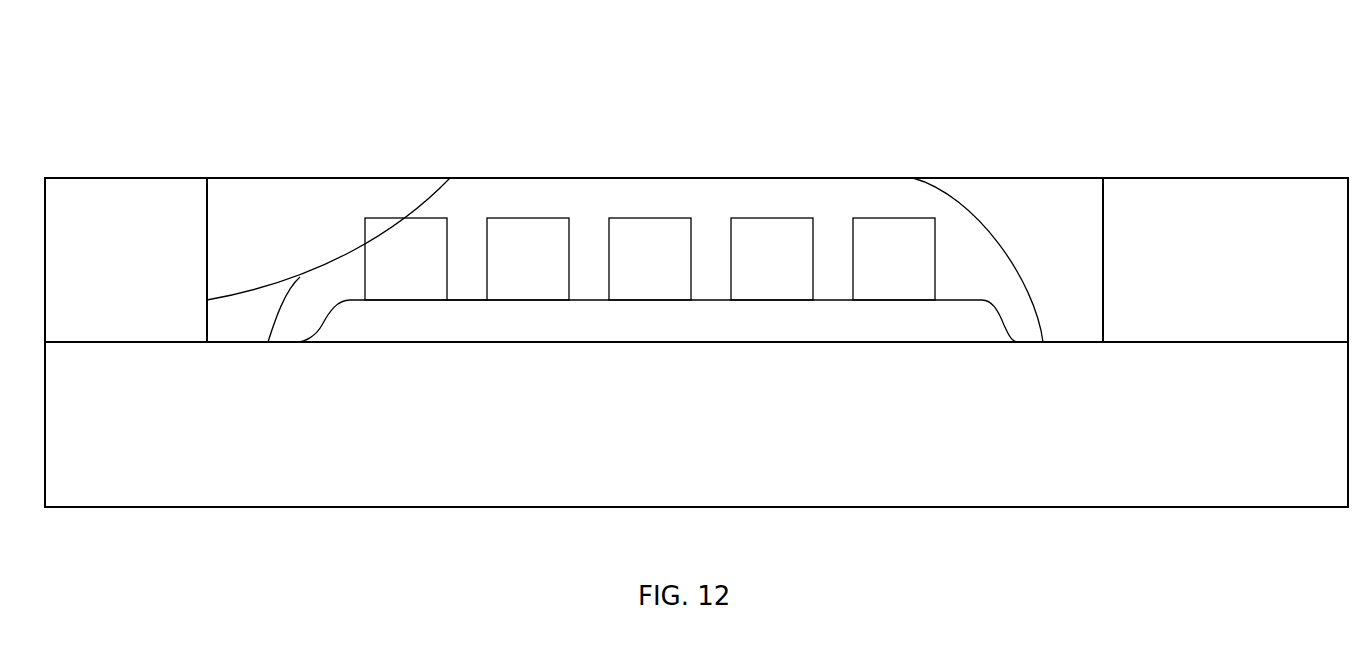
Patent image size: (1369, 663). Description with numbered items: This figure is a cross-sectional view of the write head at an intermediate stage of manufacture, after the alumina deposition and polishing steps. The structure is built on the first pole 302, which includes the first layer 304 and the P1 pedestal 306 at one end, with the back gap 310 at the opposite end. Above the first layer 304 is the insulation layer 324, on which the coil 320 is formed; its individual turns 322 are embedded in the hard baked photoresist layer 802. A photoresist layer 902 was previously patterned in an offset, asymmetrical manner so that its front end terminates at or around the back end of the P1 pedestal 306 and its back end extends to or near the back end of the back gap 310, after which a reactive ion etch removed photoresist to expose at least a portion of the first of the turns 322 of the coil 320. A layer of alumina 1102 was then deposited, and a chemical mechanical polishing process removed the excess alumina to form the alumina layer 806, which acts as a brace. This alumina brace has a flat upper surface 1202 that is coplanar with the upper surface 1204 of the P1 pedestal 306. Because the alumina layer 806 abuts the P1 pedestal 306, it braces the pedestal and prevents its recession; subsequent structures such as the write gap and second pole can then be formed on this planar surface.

The first pole 302 is at (1023, 509).
The first layer 304 is at (727, 446).
The P1 pedestal 306 is at (162, 252).
The back gap 310 is at (1288, 262).
The coil 320 is at (512, 302).
The turns 322 is at (408, 225).
The insulation layer 324 is at (737, 323).
The hard baked photoresist layer 802 is at (673, 205).
The alumina layer 806 is at (258, 195).
The photoresist layer 902 is at (248, 313).
The layer of alumina 1102 is at (615, 143).
The flat upper surface 1202 is at (268, 175).
The upper surface 1204 is at (65, 178).